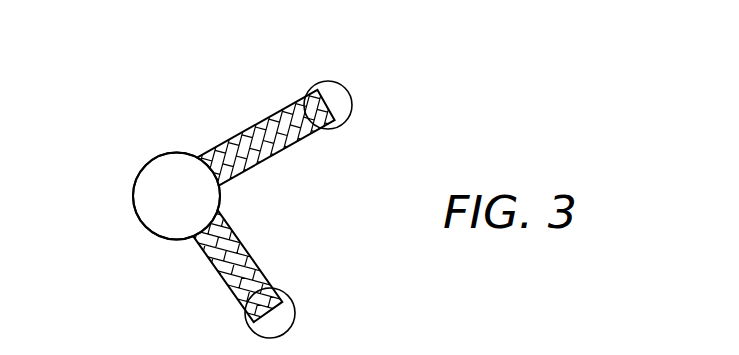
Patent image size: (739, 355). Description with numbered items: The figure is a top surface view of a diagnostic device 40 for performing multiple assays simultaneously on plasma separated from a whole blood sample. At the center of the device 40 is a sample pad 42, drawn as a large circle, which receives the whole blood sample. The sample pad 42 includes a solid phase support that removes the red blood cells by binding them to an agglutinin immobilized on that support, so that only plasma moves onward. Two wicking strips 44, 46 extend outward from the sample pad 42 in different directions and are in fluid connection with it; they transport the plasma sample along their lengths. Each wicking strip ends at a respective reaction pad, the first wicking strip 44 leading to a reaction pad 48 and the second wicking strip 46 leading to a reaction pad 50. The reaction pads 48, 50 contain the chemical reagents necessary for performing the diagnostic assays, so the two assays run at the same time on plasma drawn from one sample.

The diagnostic device 40 is at (155, 157).
The sample pad 42 is at (158, 209).
The wicking strip 44 is at (252, 133).
The wicking strip 46 is at (245, 245).
The reaction pad 48 is at (335, 98).
The reaction pad 50 is at (280, 322).